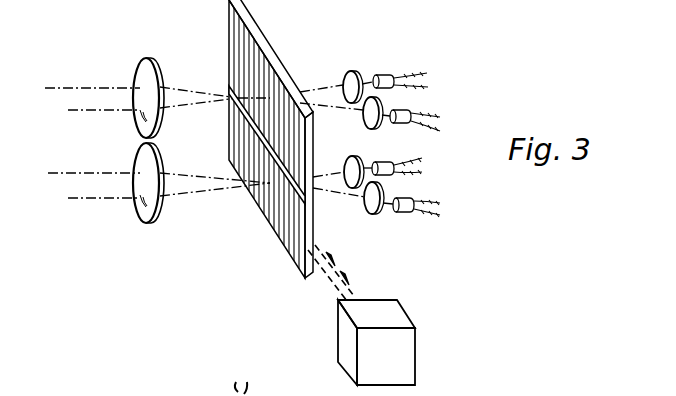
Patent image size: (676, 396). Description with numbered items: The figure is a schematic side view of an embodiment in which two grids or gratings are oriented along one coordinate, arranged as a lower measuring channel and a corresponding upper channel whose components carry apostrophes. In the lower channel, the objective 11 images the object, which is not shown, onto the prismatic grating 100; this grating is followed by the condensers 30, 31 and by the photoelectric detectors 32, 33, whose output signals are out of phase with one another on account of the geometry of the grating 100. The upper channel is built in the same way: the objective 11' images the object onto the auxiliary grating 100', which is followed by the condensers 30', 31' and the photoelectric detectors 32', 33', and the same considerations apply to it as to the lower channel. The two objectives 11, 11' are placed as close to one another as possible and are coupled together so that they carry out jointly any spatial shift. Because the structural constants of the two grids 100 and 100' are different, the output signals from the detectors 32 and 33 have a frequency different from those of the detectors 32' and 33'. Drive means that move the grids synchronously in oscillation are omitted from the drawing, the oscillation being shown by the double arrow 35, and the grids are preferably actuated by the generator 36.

The objective 11' is at (153, 80).
The objective 11 is at (148, 203).
The grid or grating 100' is at (273, 98).
The prismatic grating 100 is at (271, 144).
The condenser 30' is at (351, 67).
The condenser 31' is at (390, 125).
The condenser 30 is at (347, 159).
The condenser 31 is at (375, 216).
The photoelectric detector 32' is at (400, 63).
The photoelectric detector 33' is at (428, 109).
The photoelectric detector 32 is at (416, 174).
The photoelectric detector 33 is at (416, 225).
The double arrow 35 is at (333, 263).
The generator 36 is at (395, 369).